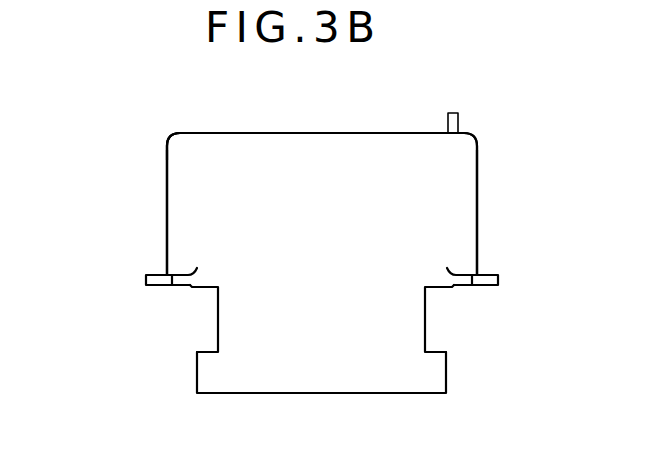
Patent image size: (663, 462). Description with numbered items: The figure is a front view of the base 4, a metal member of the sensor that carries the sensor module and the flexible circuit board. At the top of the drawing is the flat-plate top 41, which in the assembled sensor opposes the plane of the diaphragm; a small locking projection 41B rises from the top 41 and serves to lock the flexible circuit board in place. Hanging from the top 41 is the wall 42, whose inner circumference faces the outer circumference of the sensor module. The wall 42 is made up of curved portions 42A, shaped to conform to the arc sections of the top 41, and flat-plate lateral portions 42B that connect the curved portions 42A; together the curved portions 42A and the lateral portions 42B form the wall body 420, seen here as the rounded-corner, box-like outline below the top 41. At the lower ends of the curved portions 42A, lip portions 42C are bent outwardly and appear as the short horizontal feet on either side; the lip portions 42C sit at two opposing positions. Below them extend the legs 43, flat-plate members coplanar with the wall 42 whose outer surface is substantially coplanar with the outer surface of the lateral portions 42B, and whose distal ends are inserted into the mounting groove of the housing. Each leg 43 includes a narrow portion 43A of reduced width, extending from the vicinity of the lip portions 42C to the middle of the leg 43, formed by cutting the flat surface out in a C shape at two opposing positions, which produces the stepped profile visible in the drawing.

The base 4 is at (494, 116).
The top 41 is at (245, 132).
The locking projection 41B is at (450, 114).
The wall 42 is at (148, 163).
The wall body 420 is at (181, 141).
The curved portions 42A is at (166, 200).
The lateral portions 42B is at (333, 148).
The lip portions 42C is at (152, 281).
The legs 43 is at (338, 380).
The narrow portion 43A is at (204, 347).